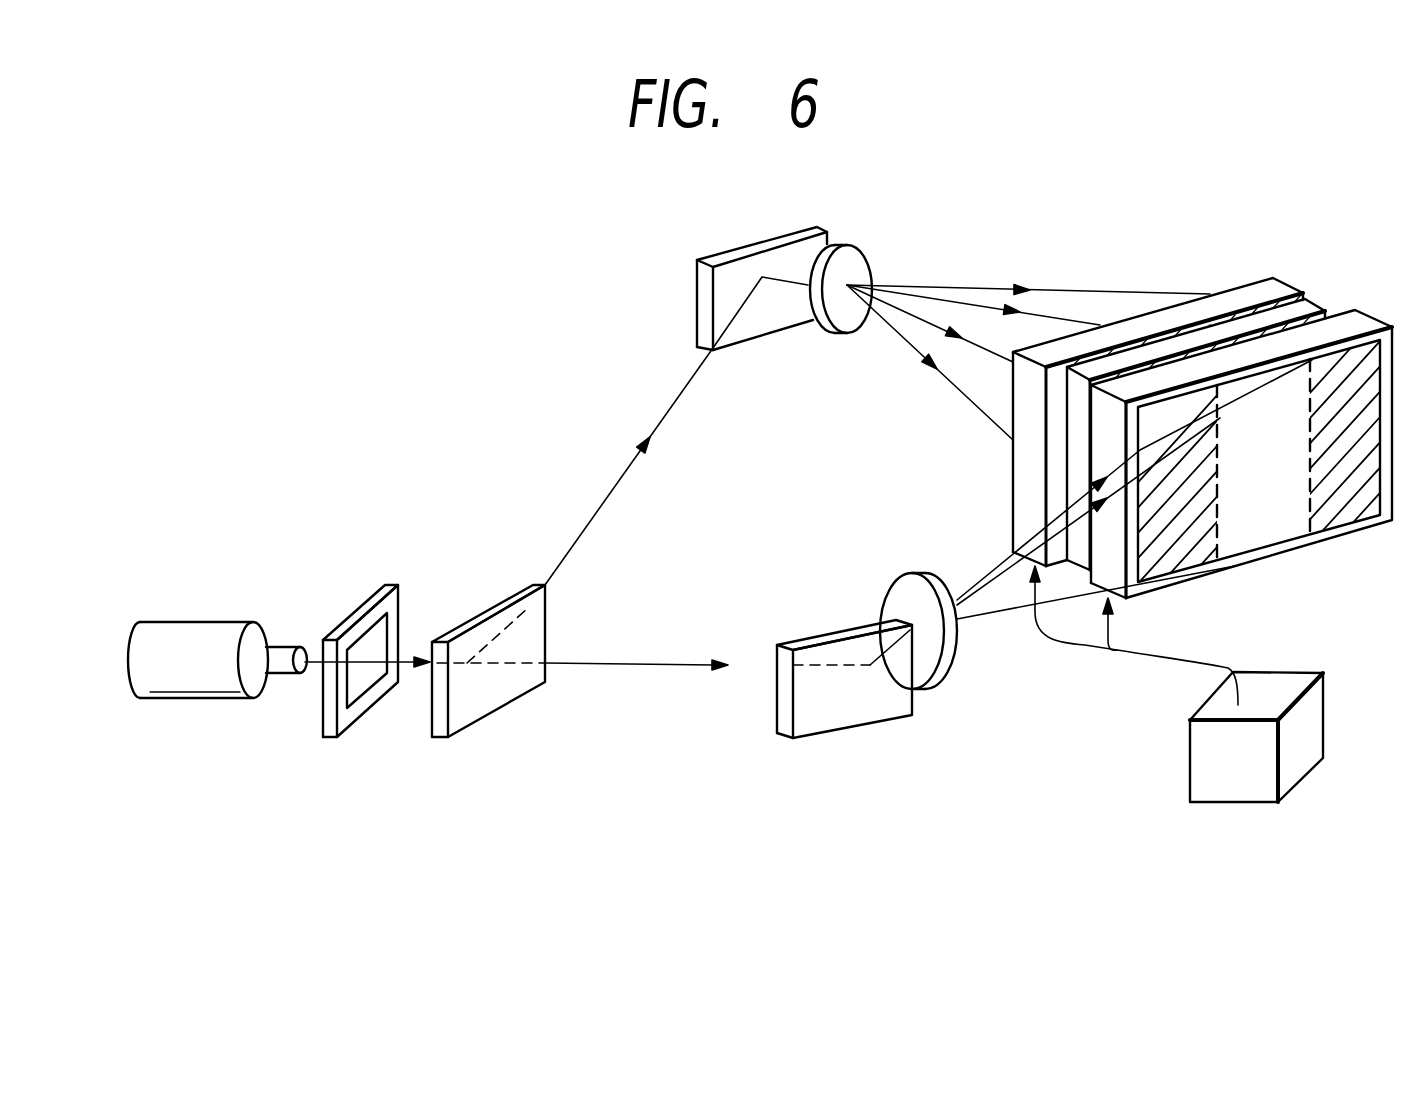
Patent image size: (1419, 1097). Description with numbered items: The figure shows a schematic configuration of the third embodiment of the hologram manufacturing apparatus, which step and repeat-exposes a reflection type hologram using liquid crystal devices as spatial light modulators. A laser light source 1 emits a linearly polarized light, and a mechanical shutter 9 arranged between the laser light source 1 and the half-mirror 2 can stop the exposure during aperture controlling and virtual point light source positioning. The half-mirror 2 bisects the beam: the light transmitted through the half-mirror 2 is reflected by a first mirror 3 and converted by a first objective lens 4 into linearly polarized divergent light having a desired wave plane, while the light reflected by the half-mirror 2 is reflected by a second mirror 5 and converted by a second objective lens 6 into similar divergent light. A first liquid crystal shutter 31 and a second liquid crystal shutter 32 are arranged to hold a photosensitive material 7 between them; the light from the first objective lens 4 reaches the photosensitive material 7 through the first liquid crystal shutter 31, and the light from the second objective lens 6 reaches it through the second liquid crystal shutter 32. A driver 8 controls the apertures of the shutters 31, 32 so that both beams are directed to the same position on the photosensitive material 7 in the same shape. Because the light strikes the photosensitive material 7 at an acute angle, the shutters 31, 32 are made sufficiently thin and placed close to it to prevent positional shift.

The laser light source 1 is at (226, 632).
The mechanical shutter 9 is at (362, 610).
The half-mirror 2 is at (487, 632).
The first mirror 3 is at (827, 652).
The first objective lens 4 is at (907, 602).
The second mirror 5 is at (742, 265).
The second objective lens 6 is at (853, 263).
The second liquid crystal shutter 32 is at (1262, 287).
The photosensitive material 7 is at (1305, 310).
The first liquid crystal shutter 31 is at (1355, 328).
The driver 8 is at (1302, 727).